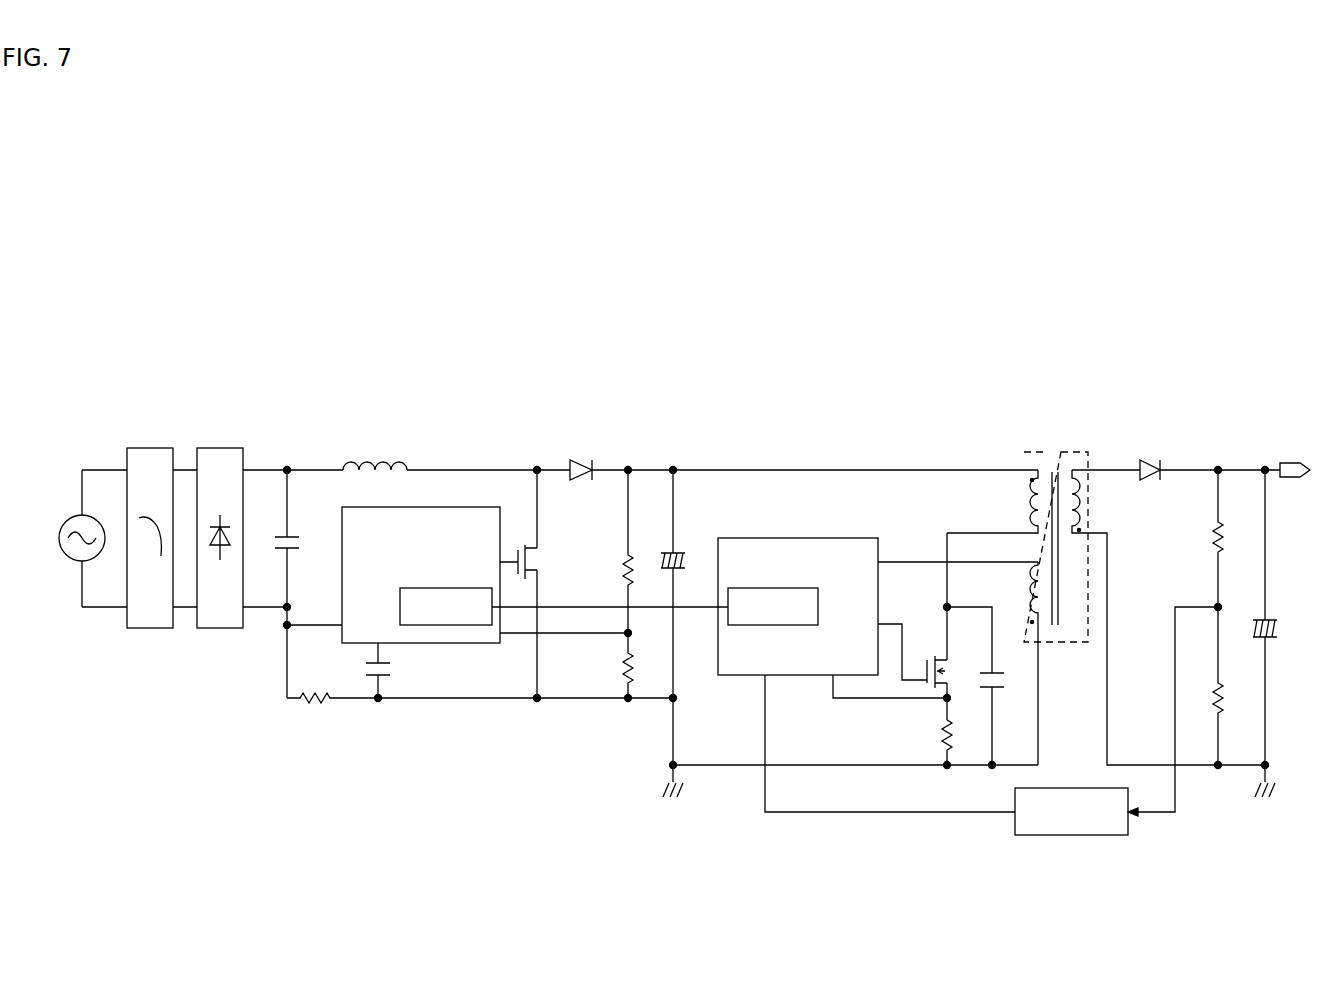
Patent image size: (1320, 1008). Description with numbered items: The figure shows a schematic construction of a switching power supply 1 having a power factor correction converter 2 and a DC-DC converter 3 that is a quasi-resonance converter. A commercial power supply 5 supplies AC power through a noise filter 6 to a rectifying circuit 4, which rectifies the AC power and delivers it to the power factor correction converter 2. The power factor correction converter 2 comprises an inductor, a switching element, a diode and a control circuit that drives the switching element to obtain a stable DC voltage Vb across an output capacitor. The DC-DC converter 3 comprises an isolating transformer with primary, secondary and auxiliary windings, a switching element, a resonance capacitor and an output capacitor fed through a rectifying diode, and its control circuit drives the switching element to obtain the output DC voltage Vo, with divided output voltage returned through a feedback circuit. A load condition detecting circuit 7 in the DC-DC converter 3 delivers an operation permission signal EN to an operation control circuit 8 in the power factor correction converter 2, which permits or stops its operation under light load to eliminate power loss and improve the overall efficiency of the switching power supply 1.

The switching power supply 1 is at (668, 363).
The power factor correction converter 2 is at (673, 448).
The DC-DC converter 3 is at (1265, 448).
The rectifying circuit 4 is at (222, 448).
The commercial power supply 5 is at (76, 514).
The noise filter 6 is at (154, 448).
The load condition detecting circuit 7 is at (734, 626).
The operation control circuit 8 is at (422, 628).